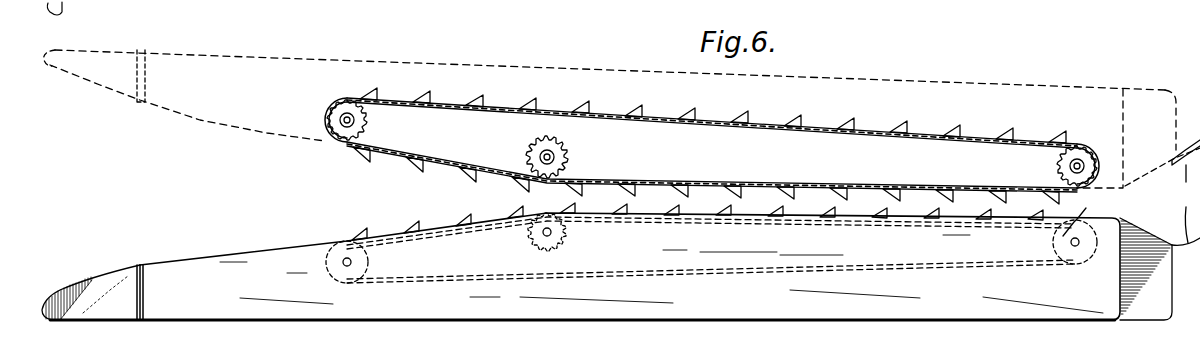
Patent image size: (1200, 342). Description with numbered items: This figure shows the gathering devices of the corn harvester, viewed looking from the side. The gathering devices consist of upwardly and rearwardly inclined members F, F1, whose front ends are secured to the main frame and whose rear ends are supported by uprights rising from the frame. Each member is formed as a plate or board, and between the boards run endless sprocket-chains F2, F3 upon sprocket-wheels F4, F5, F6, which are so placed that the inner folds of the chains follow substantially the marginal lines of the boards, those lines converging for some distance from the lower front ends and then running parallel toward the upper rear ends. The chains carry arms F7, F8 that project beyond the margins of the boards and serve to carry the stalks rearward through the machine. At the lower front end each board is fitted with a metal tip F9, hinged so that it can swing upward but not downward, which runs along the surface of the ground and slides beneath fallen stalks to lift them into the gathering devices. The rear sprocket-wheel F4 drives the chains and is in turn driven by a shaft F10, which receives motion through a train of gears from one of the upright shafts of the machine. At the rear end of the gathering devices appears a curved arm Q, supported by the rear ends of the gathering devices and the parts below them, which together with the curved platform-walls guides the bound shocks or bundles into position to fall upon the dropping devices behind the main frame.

The inclined gathering member F is at (870, 79).
The inclined gathering member F1 is at (525, 321).
The endless sprocket-chain F2 is at (395, 149).
The endless sprocket-chain F3 is at (418, 282).
The rear sprocket-wheel F4 is at (1081, 189).
The sprocket-wheel F5 is at (540, 163).
The sprocket-wheel F6 is at (338, 249).
The chain arm F7 is at (628, 178).
The chain arm F8 is at (668, 215).
The metal tip F9 is at (92, 282).
The drive shaft F10 is at (1082, 275).
The curved arm Q is at (1162, 192).